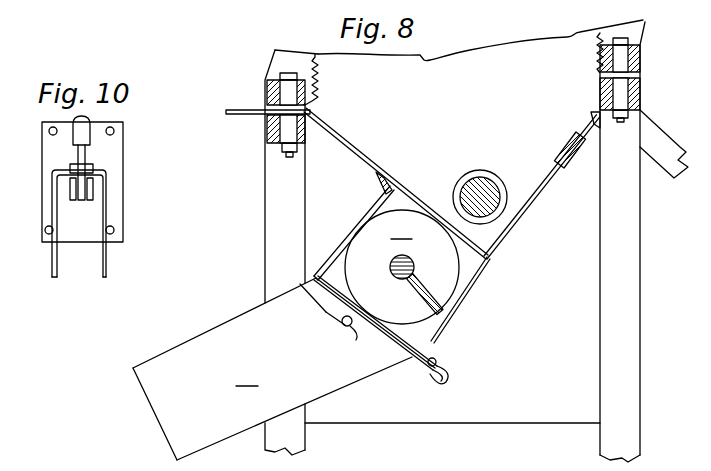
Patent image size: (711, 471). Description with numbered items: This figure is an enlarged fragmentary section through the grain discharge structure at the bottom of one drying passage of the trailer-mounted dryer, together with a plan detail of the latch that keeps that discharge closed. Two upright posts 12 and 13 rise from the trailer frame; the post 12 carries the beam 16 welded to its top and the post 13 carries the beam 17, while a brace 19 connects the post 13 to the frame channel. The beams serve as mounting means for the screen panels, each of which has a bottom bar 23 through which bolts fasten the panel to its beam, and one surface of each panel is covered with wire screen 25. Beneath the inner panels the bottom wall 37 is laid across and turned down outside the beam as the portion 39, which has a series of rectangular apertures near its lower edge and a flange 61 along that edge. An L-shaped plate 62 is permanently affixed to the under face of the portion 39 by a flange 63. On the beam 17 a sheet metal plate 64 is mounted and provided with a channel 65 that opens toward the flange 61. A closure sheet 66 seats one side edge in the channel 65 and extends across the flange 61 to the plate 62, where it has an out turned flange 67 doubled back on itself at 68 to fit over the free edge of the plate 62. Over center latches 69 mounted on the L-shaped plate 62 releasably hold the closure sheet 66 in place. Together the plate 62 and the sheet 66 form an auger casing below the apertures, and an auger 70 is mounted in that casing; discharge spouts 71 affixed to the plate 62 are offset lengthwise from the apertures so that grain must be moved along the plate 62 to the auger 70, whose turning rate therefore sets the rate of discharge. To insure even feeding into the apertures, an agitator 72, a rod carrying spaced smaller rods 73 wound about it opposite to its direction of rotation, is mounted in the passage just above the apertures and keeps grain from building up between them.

In FIG. 8, the post 12 is at (270, 268).
In FIG. 8, the post 13 is at (640, 235).
In FIG. 8, the beam 16 is at (307, 140).
In FIG. 8, the beam 17 is at (640, 103).
In FIG. 8, the brace 19 is at (670, 150).
In FIG. 8, the bottom bar 23 is at (310, 98).
In FIG. 8, the wire screen 25 is at (320, 60).
In FIG. 8, the bottom wall 37 is at (235, 108).
In FIG. 8, the turned-down portion of bottom wall 39 is at (350, 140).
In FIG. 8, the flange 61 is at (486, 270).
In FIG. 8, the L-shaped plate 62 is at (358, 222).
In FIG. 8, the flange 63 is at (374, 177).
In FIG. 8, the sheet metal plate 64 is at (588, 120).
In FIG. 8, the channel 65 is at (570, 142).
In FIG. 8, the closure sheet 66 is at (522, 226).
In FIG. 8, the out turned flange 67 is at (440, 352).
In FIG. 8, the doubled-back portion 68 is at (425, 366).
In FIG. 8, the over center latch 69 is at (340, 330).
In FIG. 10, the over center latch 69 is at (124, 172).
In FIG. 8, the auger 70 is at (402, 267).
In FIG. 8, the discharge spout 71 is at (272, 369).
In FIG. 8, the agitator 72 is at (490, 180).
In FIG. 8, the smaller rod 73 is at (456, 195).